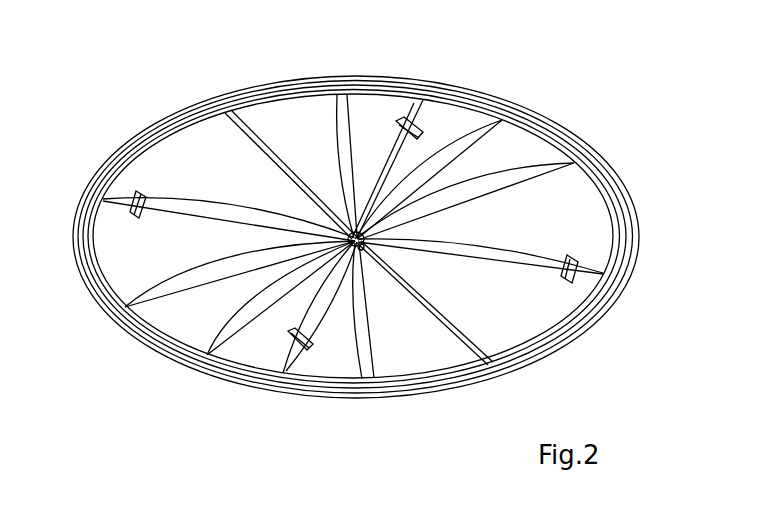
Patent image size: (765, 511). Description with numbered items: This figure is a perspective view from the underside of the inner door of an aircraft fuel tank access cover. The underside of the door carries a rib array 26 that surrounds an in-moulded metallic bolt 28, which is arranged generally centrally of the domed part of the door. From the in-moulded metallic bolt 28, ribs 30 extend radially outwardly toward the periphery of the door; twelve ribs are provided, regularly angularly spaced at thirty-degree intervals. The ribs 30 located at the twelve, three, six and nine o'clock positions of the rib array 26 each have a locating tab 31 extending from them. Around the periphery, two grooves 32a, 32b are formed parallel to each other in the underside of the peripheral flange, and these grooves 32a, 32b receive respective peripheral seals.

The rib array 26 is at (385, 229).
The in-moulded metallic bolt 28 is at (364, 252).
The ribs 30 is at (572, 166).
The locating tabs 31 is at (580, 260).
The groove 32a is at (160, 350).
The groove 32b is at (217, 366).